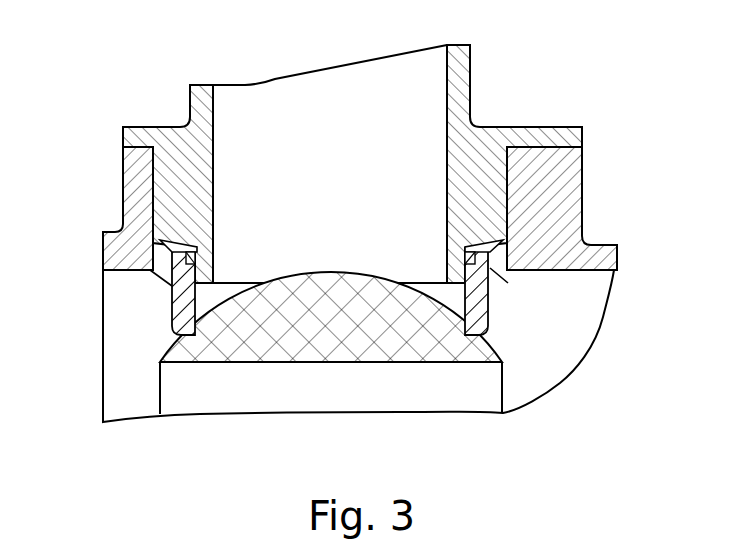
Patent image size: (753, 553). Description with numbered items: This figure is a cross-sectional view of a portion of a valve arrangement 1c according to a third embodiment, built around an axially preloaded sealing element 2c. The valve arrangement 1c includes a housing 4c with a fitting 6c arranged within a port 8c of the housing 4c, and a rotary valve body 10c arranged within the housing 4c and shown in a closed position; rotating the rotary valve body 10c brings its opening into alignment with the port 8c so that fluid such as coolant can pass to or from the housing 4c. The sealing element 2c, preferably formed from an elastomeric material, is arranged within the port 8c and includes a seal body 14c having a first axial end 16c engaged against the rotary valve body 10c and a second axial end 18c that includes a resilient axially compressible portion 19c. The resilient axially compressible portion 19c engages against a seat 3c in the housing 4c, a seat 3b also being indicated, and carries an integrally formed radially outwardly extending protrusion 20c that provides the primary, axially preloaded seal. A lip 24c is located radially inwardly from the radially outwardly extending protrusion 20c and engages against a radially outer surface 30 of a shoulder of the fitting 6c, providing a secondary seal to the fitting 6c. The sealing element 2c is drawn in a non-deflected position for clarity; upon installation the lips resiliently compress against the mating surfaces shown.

The valve arrangement 1c is at (352, 146).
The sealing element 2c is at (499, 312).
The seat 3b is at (171, 209).
The seat 3c is at (561, 276).
The housing 4c is at (567, 162).
The fitting 6c is at (200, 157).
The port 8c is at (153, 157).
The rotary valve body 10c is at (283, 343).
The seal body 14c is at (172, 287).
The first axial end 16c is at (172, 322).
The second axial end 18c is at (505, 258).
The resilient axially compressible portion 19c is at (490, 248).
The radially outwardly extending protrusion 20c is at (170, 250).
The lip 24c is at (478, 250).
The radially outer surface 30 is at (205, 247).